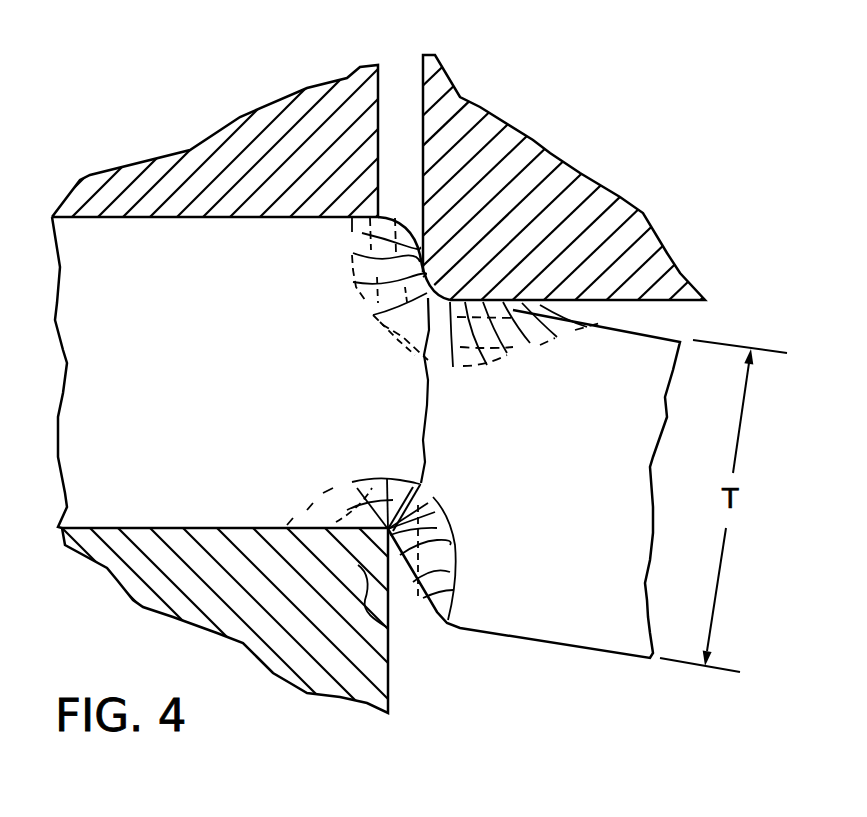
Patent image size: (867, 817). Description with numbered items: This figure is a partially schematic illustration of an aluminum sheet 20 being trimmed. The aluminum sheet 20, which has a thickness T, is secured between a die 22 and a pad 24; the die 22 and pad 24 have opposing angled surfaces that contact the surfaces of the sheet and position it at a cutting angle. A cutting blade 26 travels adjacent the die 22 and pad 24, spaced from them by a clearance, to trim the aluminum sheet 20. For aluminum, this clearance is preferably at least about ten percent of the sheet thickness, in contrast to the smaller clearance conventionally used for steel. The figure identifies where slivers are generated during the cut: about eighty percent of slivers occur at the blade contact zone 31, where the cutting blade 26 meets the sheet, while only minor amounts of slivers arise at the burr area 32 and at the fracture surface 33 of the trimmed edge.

The aluminum sheet 20 is at (553, 618).
The die 22 is at (192, 615).
The pad 24 is at (208, 143).
The cutting blade 26 is at (538, 148).
The blade contact zone 31 is at (441, 322).
The burr area 32 is at (371, 547).
The fracture surface 33 is at (444, 491).